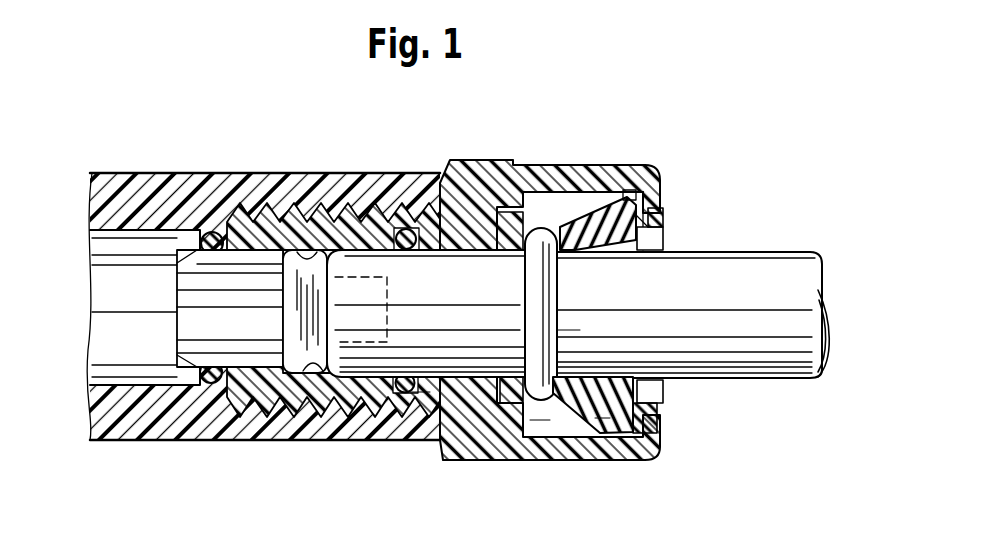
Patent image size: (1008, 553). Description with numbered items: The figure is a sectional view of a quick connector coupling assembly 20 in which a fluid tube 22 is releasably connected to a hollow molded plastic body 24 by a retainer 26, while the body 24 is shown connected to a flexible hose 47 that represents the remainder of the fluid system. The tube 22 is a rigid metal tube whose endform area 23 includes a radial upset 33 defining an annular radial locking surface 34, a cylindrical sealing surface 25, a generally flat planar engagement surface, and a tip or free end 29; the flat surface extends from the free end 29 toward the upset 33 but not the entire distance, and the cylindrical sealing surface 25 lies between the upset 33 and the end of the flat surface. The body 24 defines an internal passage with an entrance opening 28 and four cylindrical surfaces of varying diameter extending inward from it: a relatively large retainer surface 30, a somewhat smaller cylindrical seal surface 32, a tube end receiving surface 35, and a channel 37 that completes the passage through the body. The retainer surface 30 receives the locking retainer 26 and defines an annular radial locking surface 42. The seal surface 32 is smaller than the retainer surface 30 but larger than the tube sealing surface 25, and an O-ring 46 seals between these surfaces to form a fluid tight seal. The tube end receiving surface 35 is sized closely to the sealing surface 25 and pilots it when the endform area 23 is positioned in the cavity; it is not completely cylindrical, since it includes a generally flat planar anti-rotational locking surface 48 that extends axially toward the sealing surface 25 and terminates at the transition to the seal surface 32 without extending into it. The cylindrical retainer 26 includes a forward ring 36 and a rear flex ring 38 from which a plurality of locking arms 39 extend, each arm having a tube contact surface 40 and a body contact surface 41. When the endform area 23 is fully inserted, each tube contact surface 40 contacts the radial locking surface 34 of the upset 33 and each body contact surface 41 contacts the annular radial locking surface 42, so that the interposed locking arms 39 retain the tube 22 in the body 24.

The quick connector coupling assembly 20 is at (502, 136).
The fluid tube 22 is at (789, 307).
The endform area 23 is at (335, 180).
The body 24 is at (474, 156).
The cylindrical sealing surface 25 is at (462, 297).
The retainer 26 is at (595, 200).
The entrance opening 28 is at (660, 222).
The free end 29 is at (285, 412).
The retainer surface 30 is at (586, 205).
The seal surface 32 is at (425, 178).
The radial upset 33 is at (540, 420).
The annular radial locking surface 34 is at (560, 323).
The tube end receiving surface 35 is at (262, 185).
The forward ring 36 is at (508, 205).
The channel 37 is at (200, 285).
The rear flex ring 38 is at (662, 216).
The locking arms 39 is at (600, 418).
The tube contact surface 40 is at (540, 228).
The body contact surface 41 is at (655, 200).
The annular radial locking surface 42 is at (628, 190).
The O-ring 46 is at (420, 392).
The flexible hose 47 is at (132, 432).
The anti-rotational locking surface 48 is at (293, 320).